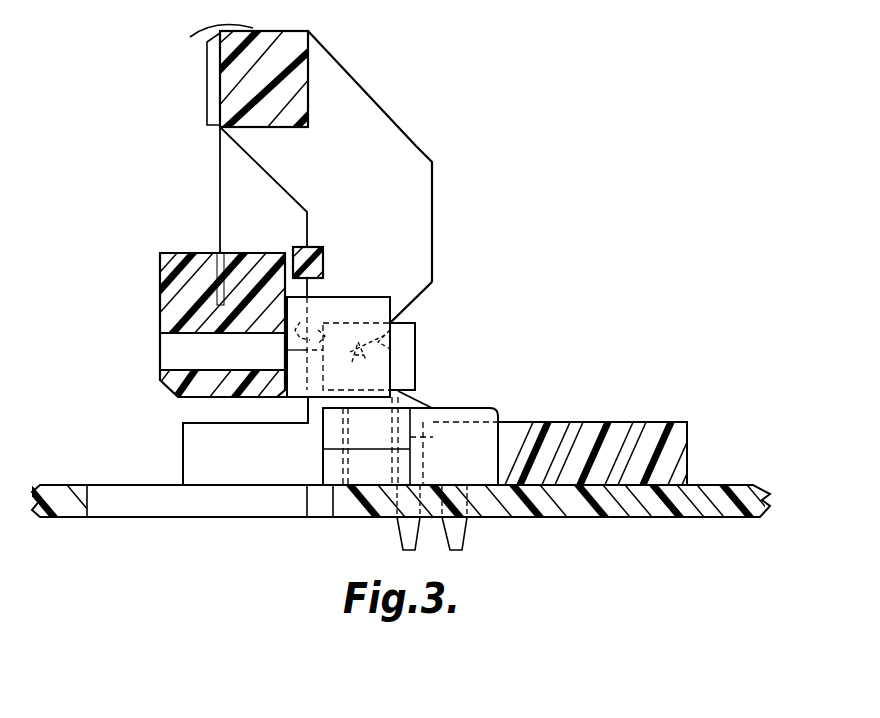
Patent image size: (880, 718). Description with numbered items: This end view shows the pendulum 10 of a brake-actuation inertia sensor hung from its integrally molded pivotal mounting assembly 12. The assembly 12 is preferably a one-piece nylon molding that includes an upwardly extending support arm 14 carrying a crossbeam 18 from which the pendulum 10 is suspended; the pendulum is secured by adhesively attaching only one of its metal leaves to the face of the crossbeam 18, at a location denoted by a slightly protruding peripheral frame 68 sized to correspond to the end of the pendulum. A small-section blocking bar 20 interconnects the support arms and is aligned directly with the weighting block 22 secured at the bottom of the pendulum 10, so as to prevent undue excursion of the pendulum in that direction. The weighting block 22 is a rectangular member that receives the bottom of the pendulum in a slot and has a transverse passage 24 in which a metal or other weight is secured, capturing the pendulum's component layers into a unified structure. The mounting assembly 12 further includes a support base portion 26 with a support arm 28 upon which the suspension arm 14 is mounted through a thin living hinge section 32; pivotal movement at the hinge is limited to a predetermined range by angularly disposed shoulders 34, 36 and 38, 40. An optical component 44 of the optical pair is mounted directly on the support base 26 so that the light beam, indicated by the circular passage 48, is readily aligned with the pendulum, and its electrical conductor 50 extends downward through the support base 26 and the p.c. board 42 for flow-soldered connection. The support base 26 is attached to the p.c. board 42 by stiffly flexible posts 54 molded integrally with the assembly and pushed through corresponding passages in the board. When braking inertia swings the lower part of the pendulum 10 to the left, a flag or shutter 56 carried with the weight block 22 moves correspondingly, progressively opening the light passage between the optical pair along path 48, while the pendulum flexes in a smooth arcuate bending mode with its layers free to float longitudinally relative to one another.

The pendulum 10 is at (220, 172).
The pivotal mounting assembly 12 is at (432, 140).
The support arm 14 is at (378, 174).
The crossbeam 18 is at (244, 79).
The blocking bar 20 is at (328, 252).
The weighting block 22 is at (160, 297).
The transverse passage 24 is at (172, 352).
The support base portion 26 is at (548, 416).
The support arm of support base 28 is at (247, 405).
The living hinge section 32 is at (400, 336).
The shoulder 34 is at (305, 326).
The shoulder 36 is at (270, 353).
The shoulder 38 is at (432, 297).
The shoulder 40 is at (428, 404).
The p.c. board 42 is at (723, 484).
The optical component 44 is at (405, 358).
The circular passage 48 is at (344, 366).
The electrical conductor 50 is at (340, 433).
The posts 54 is at (403, 438).
The flag or shutter 56 is at (358, 297).
The peripheral frame 68 is at (212, 73).